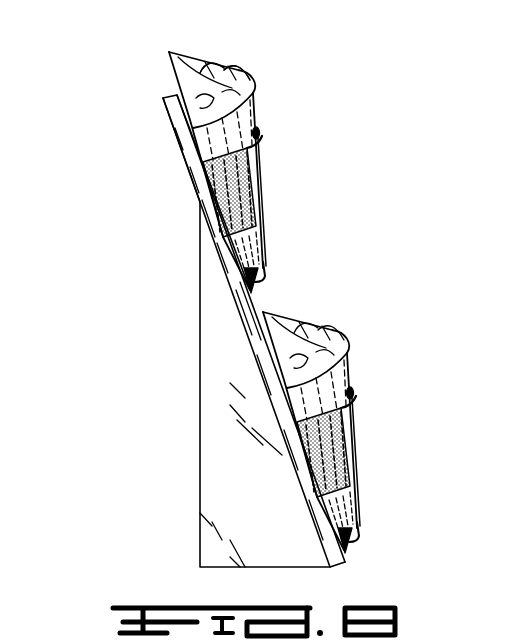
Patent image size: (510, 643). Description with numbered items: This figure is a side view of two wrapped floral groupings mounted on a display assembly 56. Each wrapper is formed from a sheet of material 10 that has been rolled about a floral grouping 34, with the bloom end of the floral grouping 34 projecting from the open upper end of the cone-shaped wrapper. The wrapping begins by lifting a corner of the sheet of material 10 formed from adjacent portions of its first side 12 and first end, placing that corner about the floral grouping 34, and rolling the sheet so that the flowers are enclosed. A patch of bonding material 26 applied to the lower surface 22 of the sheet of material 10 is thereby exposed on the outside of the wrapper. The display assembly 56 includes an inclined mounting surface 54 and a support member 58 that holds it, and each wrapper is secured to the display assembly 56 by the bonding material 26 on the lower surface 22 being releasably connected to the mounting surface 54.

The sheet of material 10 is at (255, 172).
The first side 12 is at (255, 190).
The lower surface 22 is at (258, 136).
The bonding material 26 is at (200, 196).
The floral grouping 34 is at (245, 42).
The mounting surface 54 is at (357, 549).
The display assembly 56 is at (127, 91).
The support member 58 is at (200, 447).